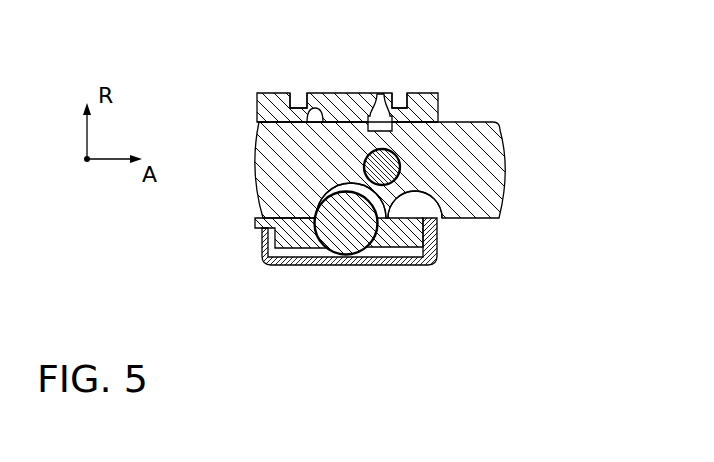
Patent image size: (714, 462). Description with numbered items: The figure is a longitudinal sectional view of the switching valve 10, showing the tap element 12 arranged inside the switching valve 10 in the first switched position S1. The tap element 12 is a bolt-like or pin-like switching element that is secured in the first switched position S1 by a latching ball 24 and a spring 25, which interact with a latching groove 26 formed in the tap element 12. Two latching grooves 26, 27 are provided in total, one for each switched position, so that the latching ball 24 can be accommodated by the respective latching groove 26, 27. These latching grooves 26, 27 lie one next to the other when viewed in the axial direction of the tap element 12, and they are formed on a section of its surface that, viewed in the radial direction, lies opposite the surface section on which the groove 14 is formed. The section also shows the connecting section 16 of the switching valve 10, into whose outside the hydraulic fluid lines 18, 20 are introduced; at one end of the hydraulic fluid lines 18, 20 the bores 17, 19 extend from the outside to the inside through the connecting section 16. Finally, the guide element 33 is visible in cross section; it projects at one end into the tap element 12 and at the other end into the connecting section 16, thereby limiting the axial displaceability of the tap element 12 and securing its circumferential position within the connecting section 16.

The switching valve 10 is at (402, 164).
The tap element 12 is at (490, 142).
The groove 14 is at (350, 130).
The connecting section 16 is at (425, 107).
The bore 17 is at (383, 98).
The hydraulic fluid line 18 is at (404, 83).
The bore 19 is at (318, 104).
The hydraulic fluid line 20 is at (295, 85).
The latching ball 24 is at (340, 237).
The spring 25 is at (400, 258).
The latching groove 26 is at (305, 190).
The latching groove 27 is at (458, 190).
The guide element 33 is at (387, 172).
The first switched position S1 is at (541, 62).